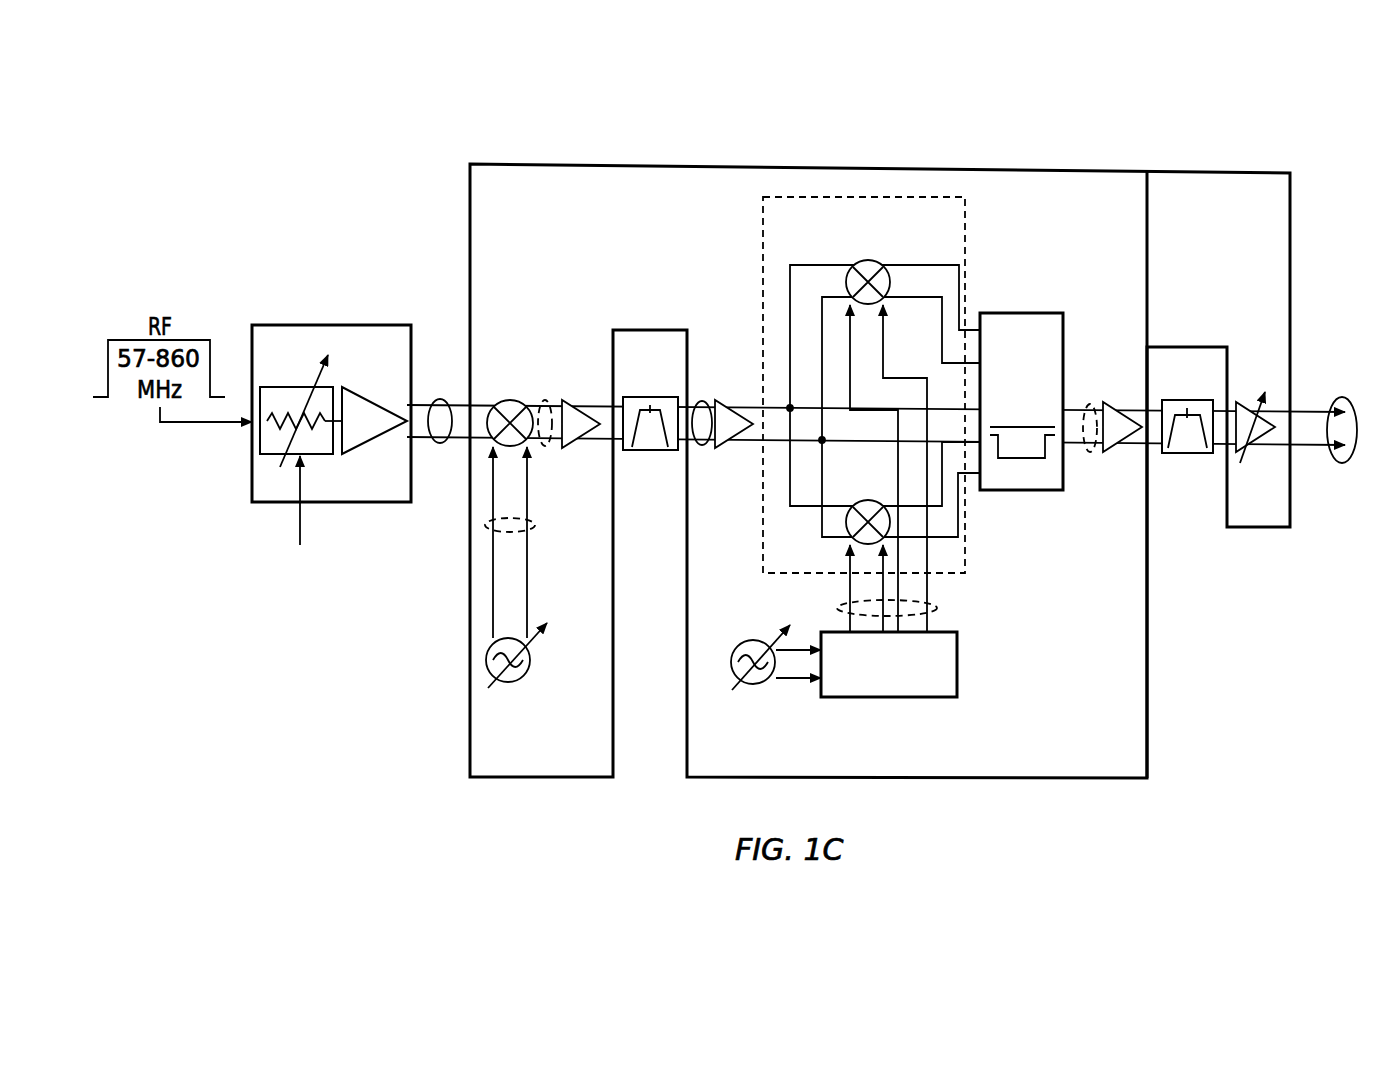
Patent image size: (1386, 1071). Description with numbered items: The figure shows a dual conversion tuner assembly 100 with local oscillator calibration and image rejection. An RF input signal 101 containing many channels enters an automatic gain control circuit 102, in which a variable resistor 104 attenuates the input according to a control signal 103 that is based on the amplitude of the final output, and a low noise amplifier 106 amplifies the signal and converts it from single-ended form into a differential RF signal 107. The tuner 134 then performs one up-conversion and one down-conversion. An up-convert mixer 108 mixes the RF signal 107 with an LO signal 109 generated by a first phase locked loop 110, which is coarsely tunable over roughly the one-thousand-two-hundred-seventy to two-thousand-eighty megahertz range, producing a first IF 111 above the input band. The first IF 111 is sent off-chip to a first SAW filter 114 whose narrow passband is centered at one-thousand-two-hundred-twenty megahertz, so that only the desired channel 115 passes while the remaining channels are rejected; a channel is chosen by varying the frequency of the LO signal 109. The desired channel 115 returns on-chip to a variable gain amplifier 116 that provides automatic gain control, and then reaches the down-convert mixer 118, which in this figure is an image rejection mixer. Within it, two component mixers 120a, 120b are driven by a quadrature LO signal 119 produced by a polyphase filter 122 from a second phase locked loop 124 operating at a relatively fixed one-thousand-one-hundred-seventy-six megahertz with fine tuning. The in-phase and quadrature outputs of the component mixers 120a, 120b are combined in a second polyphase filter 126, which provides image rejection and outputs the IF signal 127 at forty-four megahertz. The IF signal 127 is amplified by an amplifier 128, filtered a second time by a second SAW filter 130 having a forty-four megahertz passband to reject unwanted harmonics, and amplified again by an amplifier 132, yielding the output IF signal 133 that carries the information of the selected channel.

The tuner assembly 100 is at (1153, 142).
The RF input signal 101 is at (191, 430).
The automatic gain control circuit 102 is at (335, 325).
The control signal 103 is at (298, 522).
The variable resistor 104 is at (300, 386).
The low noise amplifier 106 is at (377, 400).
The differential RF signal 107 is at (440, 398).
The up-convert mixer 108 is at (513, 398).
The LO signal 109 is at (537, 525).
The first phase locked loop 110 is at (531, 660).
The first IF 111 is at (544, 449).
The first SAW filter 114 is at (655, 451).
The desired channel 115 is at (703, 446).
The variable gain amplifier 116 is at (733, 402).
The down-convert mixer 118 is at (966, 550).
The quadrature LO signal 119 is at (939, 609).
The component mixer 120a is at (870, 259).
The component mixer 120b is at (865, 499).
The polyphase filter 122 is at (958, 664).
The second phase locked loop 124 is at (742, 642).
The polyphase filter 126 is at (1024, 312).
The IF signal 127 is at (1090, 453).
The amplifier 128 is at (1116, 402).
The second SAW filter 130 is at (1190, 454).
The amplifier 132 is at (1262, 452).
The IF signal 133 is at (1343, 398).
The tuner 134 is at (876, 165).